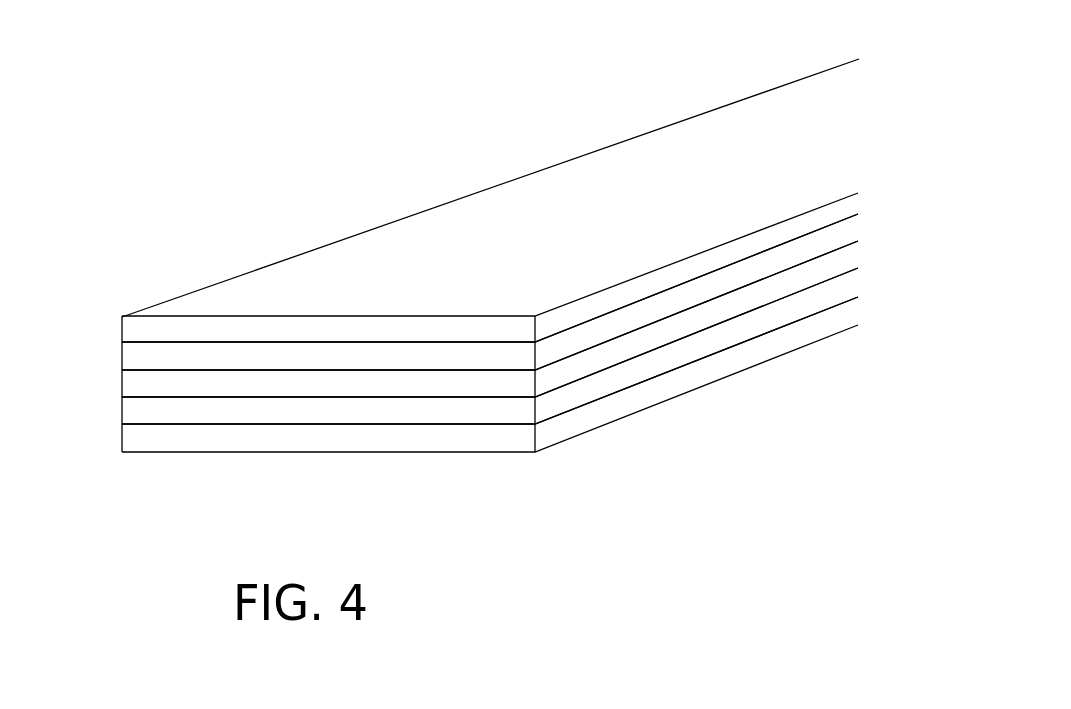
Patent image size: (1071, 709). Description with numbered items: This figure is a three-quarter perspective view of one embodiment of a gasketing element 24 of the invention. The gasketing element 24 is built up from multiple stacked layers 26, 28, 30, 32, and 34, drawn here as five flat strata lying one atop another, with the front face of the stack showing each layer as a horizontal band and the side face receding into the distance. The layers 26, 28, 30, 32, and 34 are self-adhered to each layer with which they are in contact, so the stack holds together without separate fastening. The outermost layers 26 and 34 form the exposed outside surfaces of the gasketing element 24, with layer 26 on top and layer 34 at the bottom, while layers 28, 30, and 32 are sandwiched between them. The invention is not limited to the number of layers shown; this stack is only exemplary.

The gasketing element 24 is at (576, 193).
The layer 26 is at (135, 332).
The layer 28 is at (137, 359).
The layer 30 is at (133, 388).
The layer 32 is at (142, 415).
The layer 34 is at (136, 440).